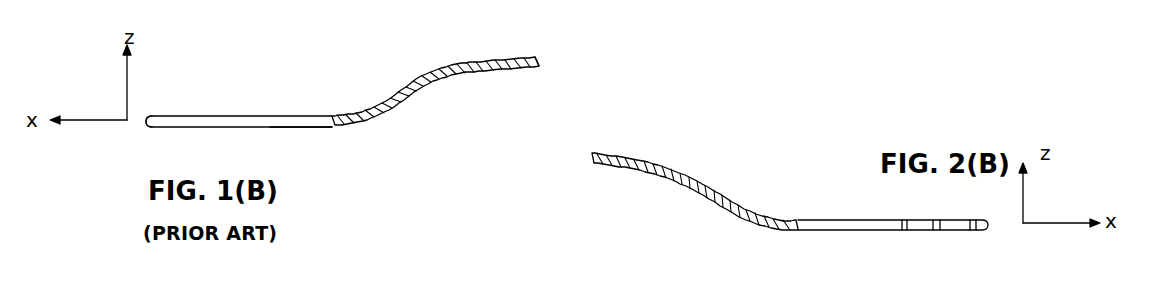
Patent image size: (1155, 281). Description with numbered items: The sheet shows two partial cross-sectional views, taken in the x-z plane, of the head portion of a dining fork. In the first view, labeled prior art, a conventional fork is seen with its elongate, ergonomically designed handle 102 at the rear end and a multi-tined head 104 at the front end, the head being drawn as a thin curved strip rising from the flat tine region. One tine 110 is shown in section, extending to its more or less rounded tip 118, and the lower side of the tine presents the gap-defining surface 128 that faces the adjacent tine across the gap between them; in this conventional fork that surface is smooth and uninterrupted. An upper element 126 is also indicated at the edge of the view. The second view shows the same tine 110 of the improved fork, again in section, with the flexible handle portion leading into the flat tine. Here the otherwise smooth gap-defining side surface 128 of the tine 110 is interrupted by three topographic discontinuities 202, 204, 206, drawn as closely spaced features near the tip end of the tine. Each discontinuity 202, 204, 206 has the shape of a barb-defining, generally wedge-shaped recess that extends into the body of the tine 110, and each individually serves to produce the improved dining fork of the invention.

In FIG. 1B, the handle 102 is at (533, 57).
In FIG. 2B, the handle 102 is at (593, 165).
In FIG. 1B, the multi-tined head 104 is at (400, 112).
In FIG. 1B, the tine 110 is at (233, 116).
In FIG. 2B, the tine 110 is at (840, 220).
In FIG. 1B, the tip 118 is at (143, 122).
In FIG. 1B, the upper element 126 is at (206, 6).
In FIG. 1B, the gap-defining surface 128 is at (285, 122).
In FIG. 2B, the topographic discontinuity 202 is at (975, 232).
In FIG. 2B, the topographic discontinuity 204 is at (942, 230).
In FIG. 2B, the topographic discontinuity 206 is at (897, 226).